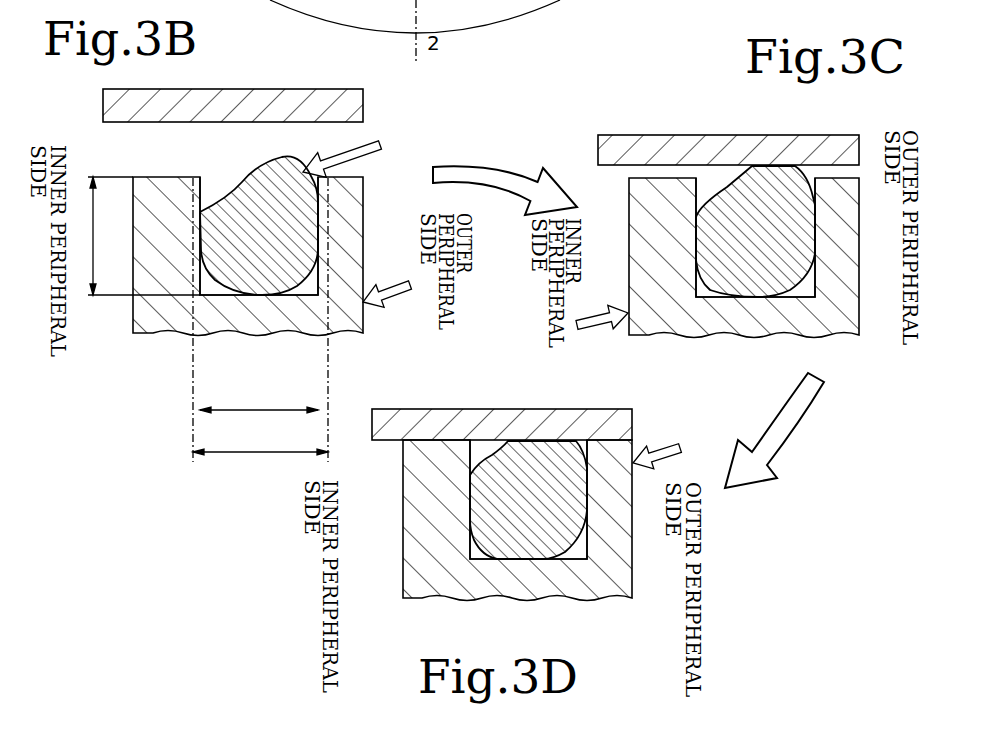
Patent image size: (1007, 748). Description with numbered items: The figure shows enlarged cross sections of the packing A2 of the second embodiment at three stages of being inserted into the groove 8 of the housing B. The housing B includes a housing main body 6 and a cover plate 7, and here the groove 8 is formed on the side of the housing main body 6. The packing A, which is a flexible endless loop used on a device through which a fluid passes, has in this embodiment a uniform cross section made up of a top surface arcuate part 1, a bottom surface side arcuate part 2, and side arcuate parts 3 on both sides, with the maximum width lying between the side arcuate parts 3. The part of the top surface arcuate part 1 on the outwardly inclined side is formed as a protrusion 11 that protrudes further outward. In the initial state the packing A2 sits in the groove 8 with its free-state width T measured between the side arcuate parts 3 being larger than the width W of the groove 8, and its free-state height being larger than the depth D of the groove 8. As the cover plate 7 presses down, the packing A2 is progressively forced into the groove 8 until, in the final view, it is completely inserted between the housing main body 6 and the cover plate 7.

In FIG. 3B, the top surface arcuate part 1 is at (273, 159).
In FIG. 3C, the top surface arcuate part 1 is at (778, 172).
In FIG. 3D, the top surface arcuate part 1 is at (548, 445).
In FIG. 3B, the bottom surface side arcuate part 2 is at (252, 284).
In FIG. 3C, the bottom surface side arcuate part 2 is at (758, 280).
In FIG. 3D, the bottom surface side arcuate part 2 is at (538, 548).
In FIG. 3B, the side arcuate parts 3 is at (200, 227).
In FIG. 3C, the side arcuate parts 3 is at (699, 232).
In FIG. 3D, the side arcuate parts 3 is at (473, 508).
In FIG. 3B, the housing main body 6 is at (364, 188).
In FIG. 3C, the housing main body 6 is at (629, 280).
In FIG. 3D, the housing main body 6 is at (404, 556).
In FIG. 3B, the cover plate 7 is at (306, 89).
In FIG. 3C, the cover plate 7 is at (674, 135).
In FIG. 3D, the cover plate 7 is at (434, 409).
In FIG. 3B, the groove 8 is at (201, 182).
In FIG. 3C, the groove 8 is at (699, 188).
In FIG. 3D, the groove 8 is at (473, 460).
In FIG. 3B, the protrusion 11 is at (299, 168).
In FIG. 3B, the packing A is at (403, 153).
In FIG. 3B, the packing A2 is at (236, 174).
In FIG. 3B, the housing B is at (415, 326).
In FIG. 3C, the housing B is at (592, 361).
In FIG. 3D, the housing B is at (699, 459).
In FIG. 3B, the depth of the groove D is at (138, 236).
In FIG. 3B, the width of the groove W is at (260, 320).
In FIG. 3B, the width of the packing T is at (260, 441).